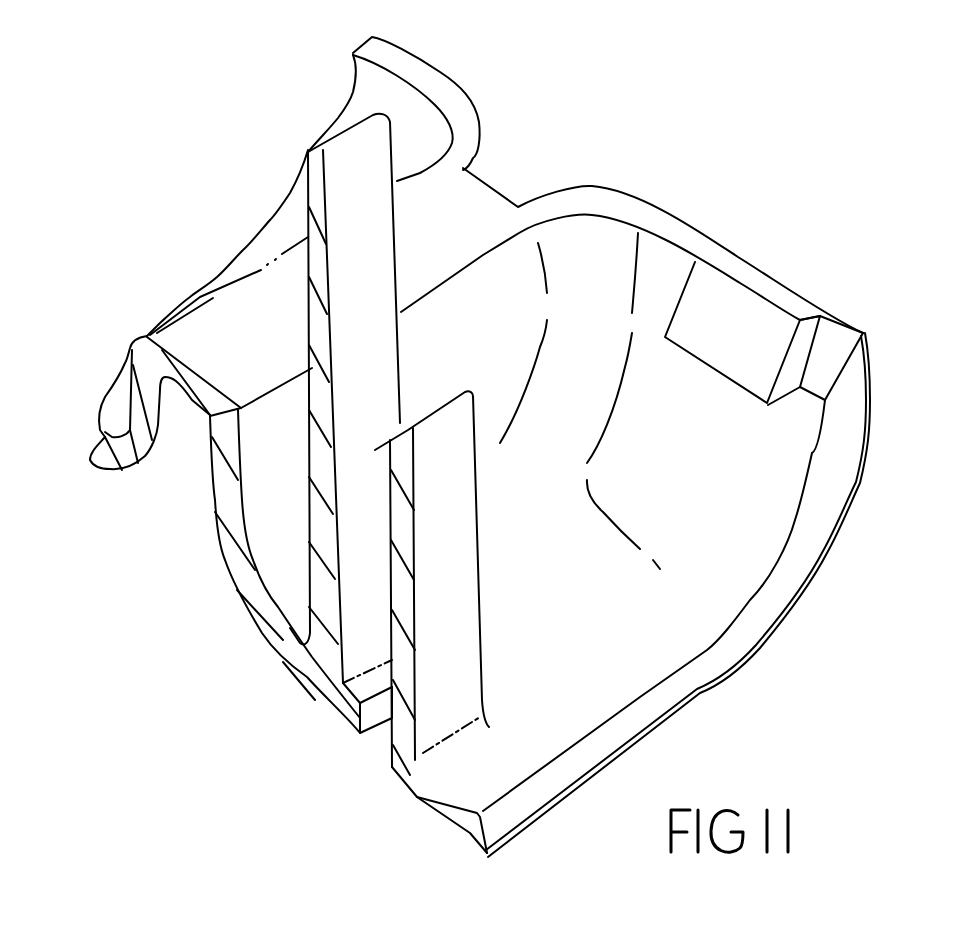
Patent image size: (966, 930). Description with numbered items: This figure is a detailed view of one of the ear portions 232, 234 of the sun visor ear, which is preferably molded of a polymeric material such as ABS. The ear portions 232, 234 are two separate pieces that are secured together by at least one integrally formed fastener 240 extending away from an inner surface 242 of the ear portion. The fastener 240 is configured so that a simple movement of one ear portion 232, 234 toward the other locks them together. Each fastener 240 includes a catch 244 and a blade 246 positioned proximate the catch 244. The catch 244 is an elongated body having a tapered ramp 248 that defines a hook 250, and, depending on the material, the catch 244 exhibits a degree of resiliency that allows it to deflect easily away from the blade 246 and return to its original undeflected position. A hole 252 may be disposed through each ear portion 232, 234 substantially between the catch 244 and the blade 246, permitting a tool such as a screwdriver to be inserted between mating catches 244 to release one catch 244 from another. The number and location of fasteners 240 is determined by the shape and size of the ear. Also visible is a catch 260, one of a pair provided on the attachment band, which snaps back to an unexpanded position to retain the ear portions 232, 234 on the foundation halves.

The ear portion 232 is at (635, 470).
The ear portion 234 is at (652, 166).
The fastener 240 is at (474, 352).
The inner surface 242 is at (656, 655).
The catch 244 is at (485, 635).
The blade 246 is at (397, 205).
The tapered ramp 248 is at (404, 440).
The hook 250 is at (390, 482).
The hole 252 is at (383, 733).
The catch 260 is at (775, 341).